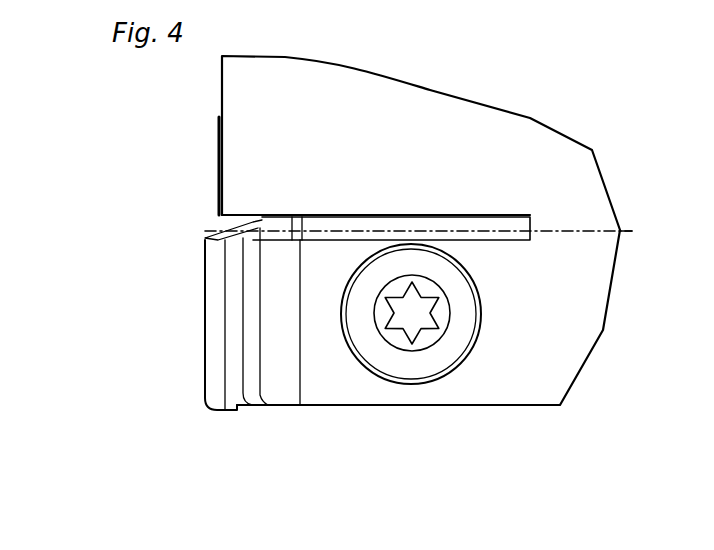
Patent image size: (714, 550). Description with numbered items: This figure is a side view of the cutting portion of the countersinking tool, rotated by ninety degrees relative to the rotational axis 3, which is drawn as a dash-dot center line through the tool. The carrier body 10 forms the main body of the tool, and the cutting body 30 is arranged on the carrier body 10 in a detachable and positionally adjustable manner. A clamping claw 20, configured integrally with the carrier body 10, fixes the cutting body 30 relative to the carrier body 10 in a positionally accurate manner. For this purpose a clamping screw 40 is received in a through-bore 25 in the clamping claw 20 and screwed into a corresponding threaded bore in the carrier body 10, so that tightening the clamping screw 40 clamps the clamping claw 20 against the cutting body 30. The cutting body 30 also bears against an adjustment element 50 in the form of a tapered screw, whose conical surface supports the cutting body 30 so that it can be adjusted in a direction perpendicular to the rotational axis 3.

The carrier body 10 is at (500, 138).
The adjustment element 50 is at (222, 155).
The cutting body 30 is at (203, 385).
The clamping claw 20 is at (530, 378).
The clamping screw 40 is at (373, 348).
The through-bore 25 is at (447, 377).
The rotational axis 3 is at (626, 233).